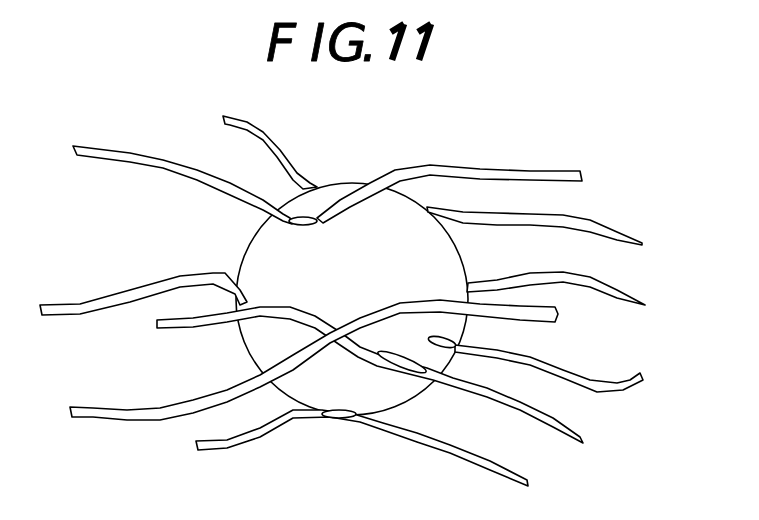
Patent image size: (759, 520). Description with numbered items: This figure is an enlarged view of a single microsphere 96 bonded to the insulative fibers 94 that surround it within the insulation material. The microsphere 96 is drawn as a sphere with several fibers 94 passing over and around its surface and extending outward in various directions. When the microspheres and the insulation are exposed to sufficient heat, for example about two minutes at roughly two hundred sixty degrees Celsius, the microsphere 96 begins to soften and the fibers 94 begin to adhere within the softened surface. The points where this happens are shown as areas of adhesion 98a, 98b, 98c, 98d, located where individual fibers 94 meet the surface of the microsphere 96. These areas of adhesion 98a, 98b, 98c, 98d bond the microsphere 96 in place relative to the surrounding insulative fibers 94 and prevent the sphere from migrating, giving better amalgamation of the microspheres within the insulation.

The fibers 94 is at (527, 172).
The microspheres 96 is at (356, 376).
The area of adhesion 98a is at (310, 220).
The area of adhesion 98b is at (450, 336).
The area of adhesion 98c is at (394, 362).
The area of adhesion 98d is at (340, 417).